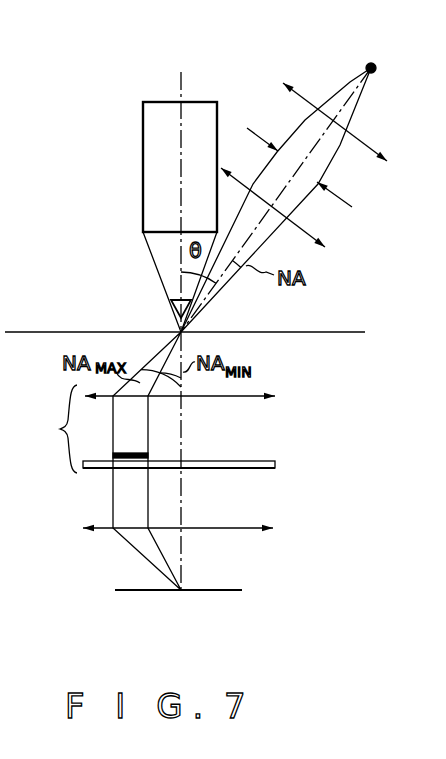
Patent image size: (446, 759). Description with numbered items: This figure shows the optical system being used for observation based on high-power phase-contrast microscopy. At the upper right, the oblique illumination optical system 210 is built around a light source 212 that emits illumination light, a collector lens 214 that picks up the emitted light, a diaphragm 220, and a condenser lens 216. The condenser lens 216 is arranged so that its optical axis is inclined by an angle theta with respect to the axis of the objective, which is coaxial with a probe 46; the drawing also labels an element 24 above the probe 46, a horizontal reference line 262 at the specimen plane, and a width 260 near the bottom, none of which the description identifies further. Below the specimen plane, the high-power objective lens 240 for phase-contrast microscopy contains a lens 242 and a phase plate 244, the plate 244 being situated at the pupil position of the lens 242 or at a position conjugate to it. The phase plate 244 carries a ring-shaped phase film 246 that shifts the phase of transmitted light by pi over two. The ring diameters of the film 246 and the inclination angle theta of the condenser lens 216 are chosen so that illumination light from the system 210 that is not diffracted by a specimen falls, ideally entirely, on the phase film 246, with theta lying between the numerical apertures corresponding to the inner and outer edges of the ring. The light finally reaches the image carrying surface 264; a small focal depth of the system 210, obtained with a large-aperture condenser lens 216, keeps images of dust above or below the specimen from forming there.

The oblique illumination optical system 210 is at (320, 72).
The light source 212 is at (376, 70).
The collector lens 214 is at (378, 145).
The condenser lens 216 is at (323, 238).
The diaphragm 220 is at (353, 198).
The objective lens 24 is at (143, 197).
The probe 46 is at (173, 300).
The focal plane line 262 is at (353, 335).
The lens 242 is at (278, 397).
The high-power objective lens 240 is at (48, 429).
The ring-shaped phase film 246 is at (132, 453).
The phase plate 244 is at (263, 470).
The beam width dimension 260 is at (268, 532).
The image carrying surface 264 is at (247, 592).